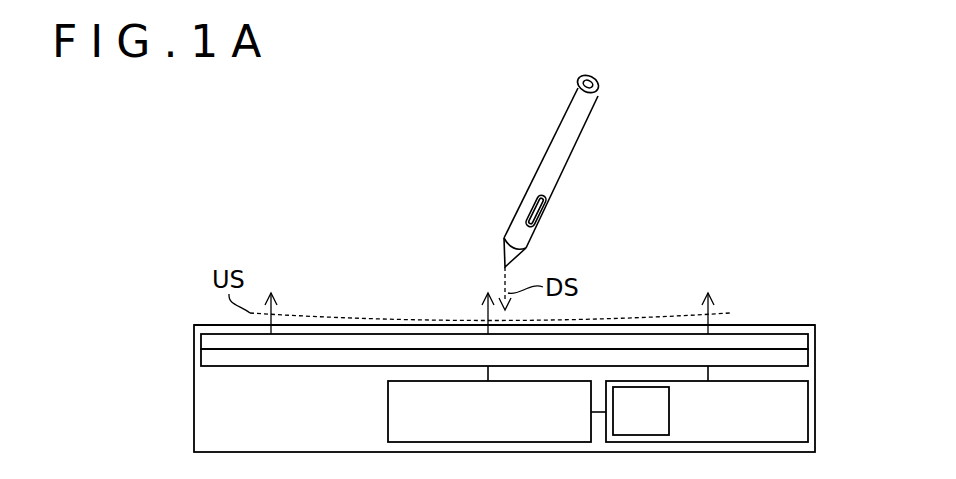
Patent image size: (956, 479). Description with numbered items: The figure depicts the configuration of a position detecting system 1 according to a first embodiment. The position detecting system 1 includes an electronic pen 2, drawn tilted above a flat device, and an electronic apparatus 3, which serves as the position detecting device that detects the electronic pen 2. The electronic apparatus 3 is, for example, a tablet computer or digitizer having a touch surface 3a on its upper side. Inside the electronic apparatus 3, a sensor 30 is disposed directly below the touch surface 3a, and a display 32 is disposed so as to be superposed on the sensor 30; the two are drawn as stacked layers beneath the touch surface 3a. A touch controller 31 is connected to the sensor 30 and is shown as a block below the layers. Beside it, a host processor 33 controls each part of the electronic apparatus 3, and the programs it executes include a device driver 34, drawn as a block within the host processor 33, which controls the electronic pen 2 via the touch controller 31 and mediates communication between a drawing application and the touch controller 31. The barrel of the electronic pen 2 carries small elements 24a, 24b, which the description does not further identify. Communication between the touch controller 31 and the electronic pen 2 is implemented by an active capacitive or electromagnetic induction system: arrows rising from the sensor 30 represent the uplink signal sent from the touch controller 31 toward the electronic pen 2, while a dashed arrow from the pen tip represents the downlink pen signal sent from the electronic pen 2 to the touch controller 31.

The position detecting system 1 is at (338, 165).
The electronic pen 2 is at (568, 107).
The side switch 24a is at (535, 225).
The side switch opening 24b is at (547, 200).
The electronic apparatus 3 is at (194, 428).
The touch surface 3a is at (760, 325).
The sensor 30 is at (201, 342).
The display 32 is at (201, 357).
The touch controller 31 is at (506, 424).
The host processor 33 is at (723, 423).
The device driver 34 is at (658, 423).